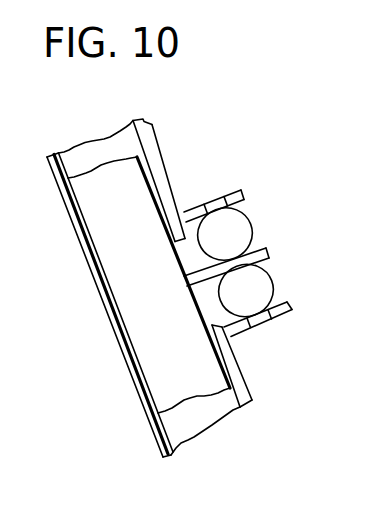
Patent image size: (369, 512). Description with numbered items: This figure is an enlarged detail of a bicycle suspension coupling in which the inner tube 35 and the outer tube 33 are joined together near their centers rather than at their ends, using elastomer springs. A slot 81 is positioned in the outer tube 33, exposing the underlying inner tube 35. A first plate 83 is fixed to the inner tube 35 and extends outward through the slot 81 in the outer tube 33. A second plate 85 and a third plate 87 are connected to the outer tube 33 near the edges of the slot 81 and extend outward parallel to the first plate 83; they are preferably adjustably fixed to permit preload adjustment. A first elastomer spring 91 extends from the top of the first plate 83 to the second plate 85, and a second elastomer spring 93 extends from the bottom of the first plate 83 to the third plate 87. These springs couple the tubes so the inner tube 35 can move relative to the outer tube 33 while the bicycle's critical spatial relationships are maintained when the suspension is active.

The outer tube 33 is at (248, 441).
The inner tube 35 is at (93, 183).
The slot 81 is at (200, 297).
The first plate 83 is at (267, 248).
The second plate 85 is at (234, 192).
The third plate 87 is at (283, 312).
The first elastomer spring 91 is at (246, 213).
The second elastomer spring 93 is at (270, 277).